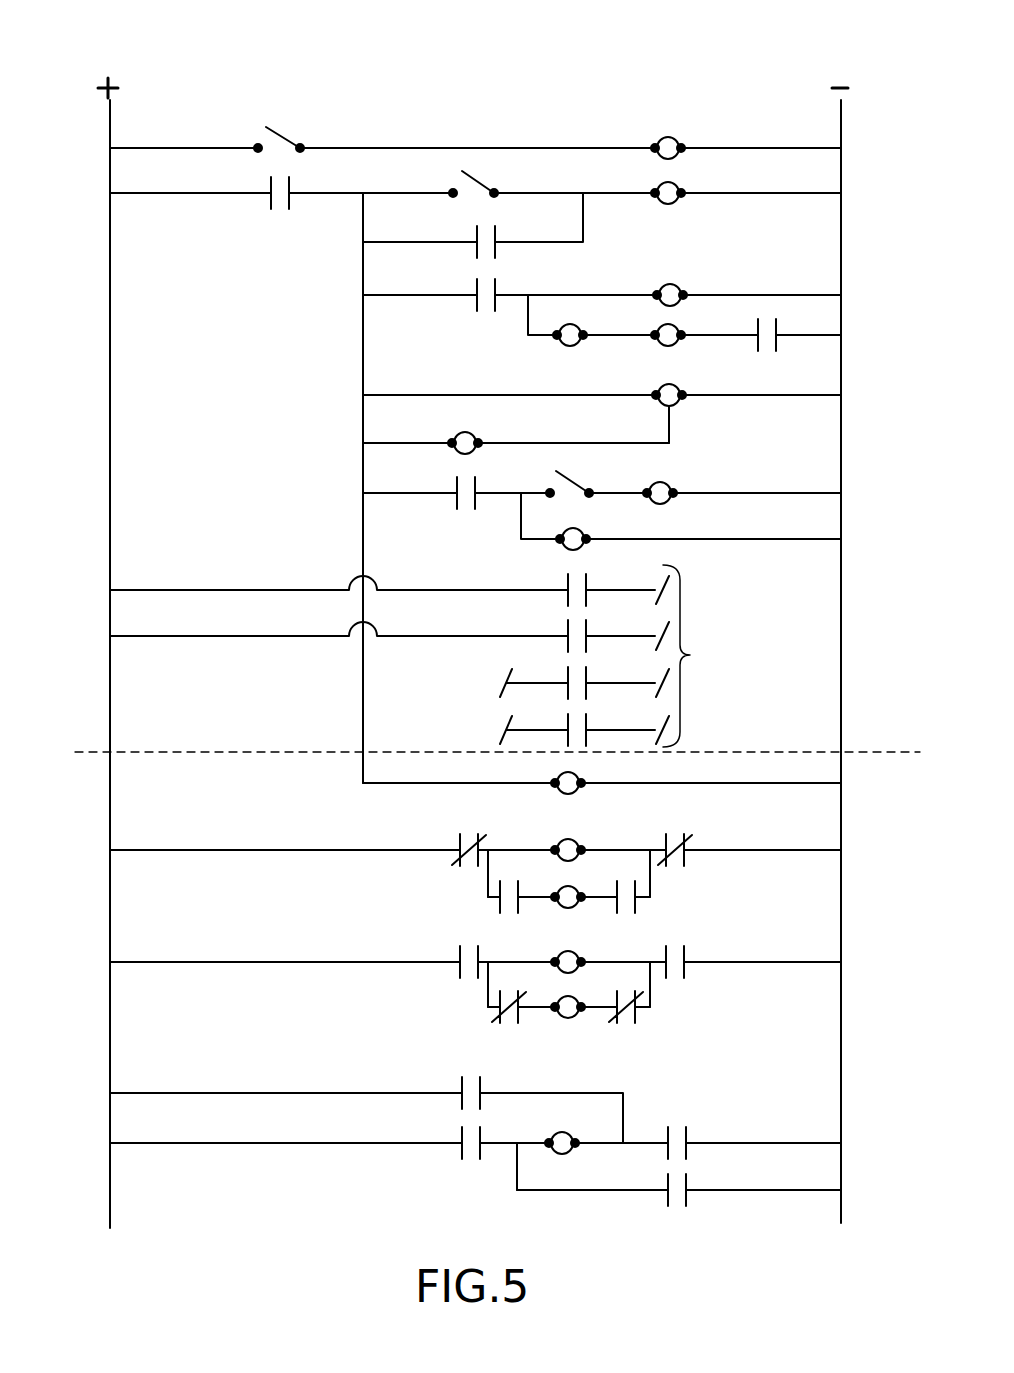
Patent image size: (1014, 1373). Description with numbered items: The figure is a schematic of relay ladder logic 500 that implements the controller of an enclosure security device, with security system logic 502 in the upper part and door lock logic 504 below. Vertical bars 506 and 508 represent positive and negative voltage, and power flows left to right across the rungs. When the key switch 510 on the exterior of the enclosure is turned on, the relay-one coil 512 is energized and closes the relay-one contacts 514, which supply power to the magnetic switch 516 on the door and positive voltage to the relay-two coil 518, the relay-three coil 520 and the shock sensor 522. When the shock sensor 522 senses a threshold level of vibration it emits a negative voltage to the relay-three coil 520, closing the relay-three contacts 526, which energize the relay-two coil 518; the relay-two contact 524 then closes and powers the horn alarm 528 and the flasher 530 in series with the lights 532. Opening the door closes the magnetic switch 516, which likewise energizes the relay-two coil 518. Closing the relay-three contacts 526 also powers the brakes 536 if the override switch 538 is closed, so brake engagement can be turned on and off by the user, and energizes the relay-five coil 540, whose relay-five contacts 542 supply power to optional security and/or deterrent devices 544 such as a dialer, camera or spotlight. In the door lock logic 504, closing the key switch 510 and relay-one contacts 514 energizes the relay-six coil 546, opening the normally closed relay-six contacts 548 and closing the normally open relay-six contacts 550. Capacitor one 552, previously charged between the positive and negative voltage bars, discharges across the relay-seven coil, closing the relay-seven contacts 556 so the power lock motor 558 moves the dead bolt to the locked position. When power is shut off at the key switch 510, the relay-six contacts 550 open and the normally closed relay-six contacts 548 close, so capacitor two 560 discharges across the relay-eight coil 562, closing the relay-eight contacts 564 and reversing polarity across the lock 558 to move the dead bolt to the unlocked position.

The relay ladder logic 500 is at (160, 70).
The security system logic 502 is at (96, 316).
The door lock logic 504 is at (103, 1014).
The positive voltage bar 506 is at (110, 218).
The negative voltage bar 508 is at (841, 210).
The key switch 510 is at (283, 132).
The R1 coil 512 is at (657, 146).
The R1 contacts 514 is at (276, 212).
The magnetic switch 516 is at (466, 182).
The R2 coil 518 is at (668, 204).
The R3 coil 520 is at (450, 436).
The shock sensor 522 is at (680, 402).
The R2 contact 524 is at (478, 306).
The R3 contacts 526 is at (478, 250).
The horn alarm 528 is at (660, 286).
The flasher 530 is at (575, 347).
The lights 532 is at (680, 338).
The brakes 536 is at (668, 504).
The override switch 538 is at (562, 480).
The R5 coil 540 is at (585, 528).
The R5 contacts 542 is at (567, 600).
The security and/or deterrent devices 544 is at (740, 716).
The R6 coil 546 is at (560, 792).
The normally closed R6 contacts 548 is at (465, 836).
The normally open R6 contacts 550 is at (498, 908).
The capacitor one 552 is at (580, 845).
The R7 contacts 556 is at (466, 1160).
The power lock motor 558 is at (566, 1154).
The capacitor two 560 is at (560, 955).
The R8 coil 562 is at (576, 906).
The R8 contacts 564 is at (468, 1076).